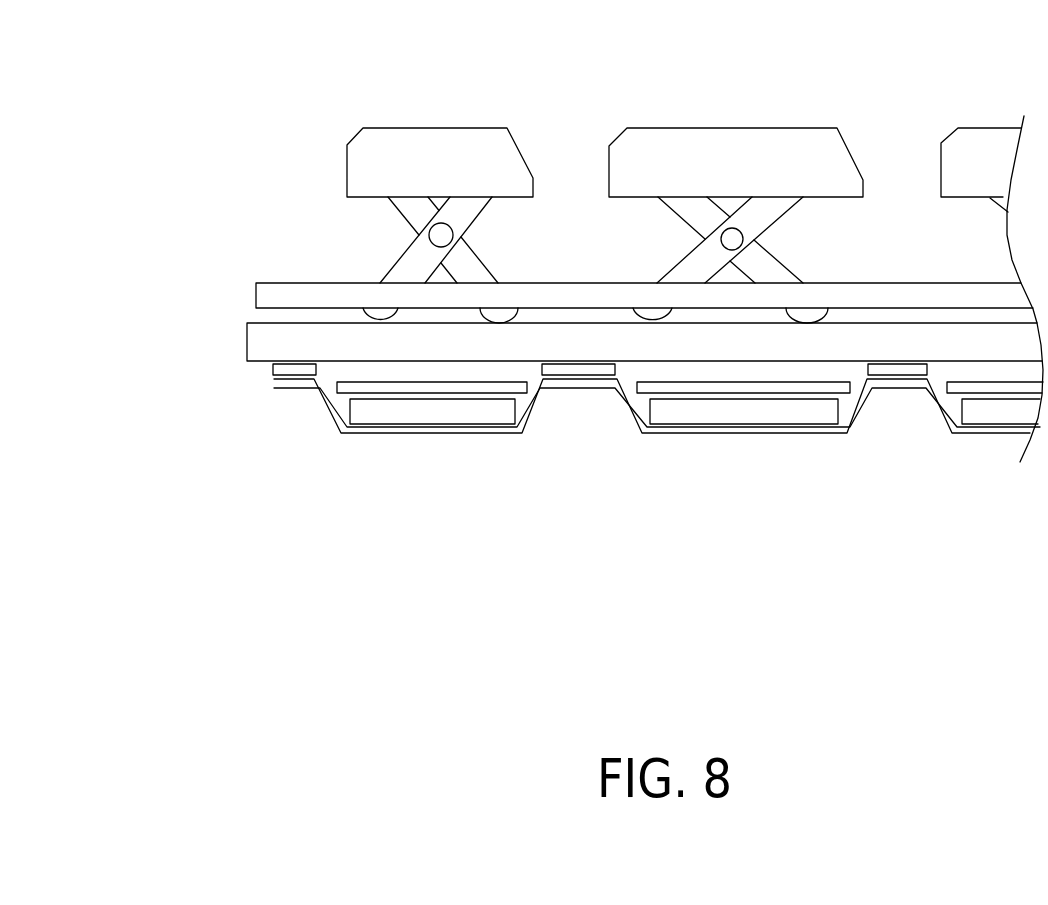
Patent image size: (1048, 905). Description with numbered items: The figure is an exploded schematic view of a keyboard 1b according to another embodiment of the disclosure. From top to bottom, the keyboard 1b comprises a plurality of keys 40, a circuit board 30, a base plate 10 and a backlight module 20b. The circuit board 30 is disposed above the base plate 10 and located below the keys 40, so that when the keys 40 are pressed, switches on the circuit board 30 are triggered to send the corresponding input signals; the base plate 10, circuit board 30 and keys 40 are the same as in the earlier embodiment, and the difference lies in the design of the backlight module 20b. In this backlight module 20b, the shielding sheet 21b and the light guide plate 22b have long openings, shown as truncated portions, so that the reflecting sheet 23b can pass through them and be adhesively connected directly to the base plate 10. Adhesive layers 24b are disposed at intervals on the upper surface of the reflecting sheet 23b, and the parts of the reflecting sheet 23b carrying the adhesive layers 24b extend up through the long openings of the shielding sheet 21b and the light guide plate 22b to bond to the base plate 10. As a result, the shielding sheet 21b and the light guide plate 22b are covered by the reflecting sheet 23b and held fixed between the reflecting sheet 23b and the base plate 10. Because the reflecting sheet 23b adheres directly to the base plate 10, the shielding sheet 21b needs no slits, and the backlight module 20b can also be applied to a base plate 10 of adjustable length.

The keyboard 1b is at (141, 81).
The base plate 10 is at (260, 341).
The circuit board 30 is at (278, 292).
The keys 40 is at (362, 140).
The backlight module 20b is at (240, 389).
The shielding sheet 21b is at (355, 387).
The light guide plate 22b is at (383, 411).
The reflecting sheet 23b is at (457, 431).
The adhesive layers 24b is at (588, 369).